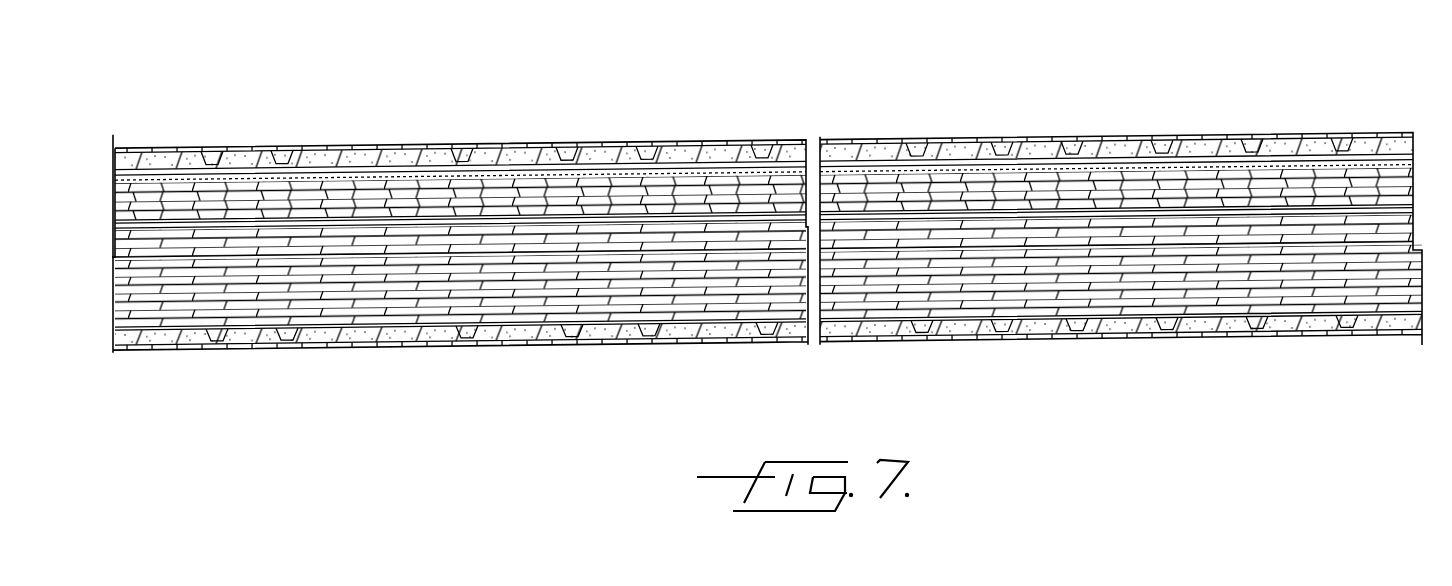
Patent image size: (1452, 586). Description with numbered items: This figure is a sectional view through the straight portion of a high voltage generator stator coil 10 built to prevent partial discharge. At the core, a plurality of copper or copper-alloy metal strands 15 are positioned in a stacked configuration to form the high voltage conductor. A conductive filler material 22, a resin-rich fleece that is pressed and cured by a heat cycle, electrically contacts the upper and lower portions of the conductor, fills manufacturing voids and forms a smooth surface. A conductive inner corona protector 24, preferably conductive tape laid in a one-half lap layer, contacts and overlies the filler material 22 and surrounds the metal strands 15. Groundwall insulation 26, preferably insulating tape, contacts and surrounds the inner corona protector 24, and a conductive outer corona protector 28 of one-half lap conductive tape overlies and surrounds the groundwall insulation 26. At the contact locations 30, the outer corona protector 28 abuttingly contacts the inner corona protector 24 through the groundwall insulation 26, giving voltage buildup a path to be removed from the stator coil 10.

The high voltage generator stator coil 10 is at (859, 112).
The metal strands 15 is at (116, 288).
The conductive filler material 22 is at (458, 172).
The conductive inner corona protector 24 is at (360, 150).
The groundwall insulation 26 is at (683, 162).
The conductive outer corona protector 28 is at (1144, 136).
The electrical contact locations 30 is at (966, 123).